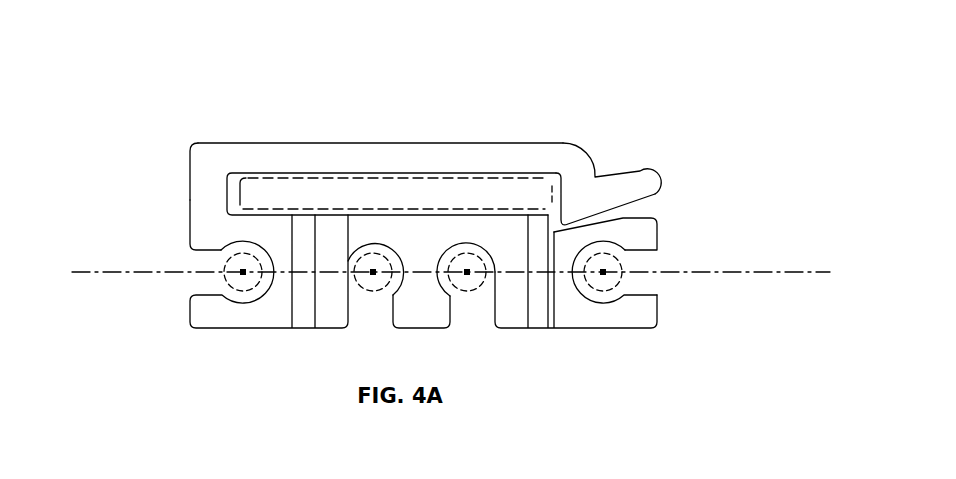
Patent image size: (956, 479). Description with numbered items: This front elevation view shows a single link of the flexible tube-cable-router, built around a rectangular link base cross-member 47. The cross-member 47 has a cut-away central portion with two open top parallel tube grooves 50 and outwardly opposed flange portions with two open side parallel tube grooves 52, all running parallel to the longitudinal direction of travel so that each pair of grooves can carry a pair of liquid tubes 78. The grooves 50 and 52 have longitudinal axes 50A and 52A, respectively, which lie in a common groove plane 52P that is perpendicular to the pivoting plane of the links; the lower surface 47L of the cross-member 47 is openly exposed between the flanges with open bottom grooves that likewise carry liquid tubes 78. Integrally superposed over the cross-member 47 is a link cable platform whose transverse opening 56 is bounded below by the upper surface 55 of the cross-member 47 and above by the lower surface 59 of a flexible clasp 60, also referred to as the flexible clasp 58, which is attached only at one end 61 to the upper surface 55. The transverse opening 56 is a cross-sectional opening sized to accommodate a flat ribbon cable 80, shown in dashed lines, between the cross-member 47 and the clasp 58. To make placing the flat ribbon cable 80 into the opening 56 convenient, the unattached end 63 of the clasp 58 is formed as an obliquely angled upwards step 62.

The link base cross-member 47 is at (268, 343).
The lower surface of link base cross-member 47L is at (445, 330).
The open top parallel tube grooves 50 is at (366, 298).
The longitudinal axis of tube grooves 50 50A is at (463, 293).
The open side parallel tube grooves 52 is at (179, 276).
The longitudinal axis of tube grooves 52 52A is at (240, 273).
The groove plane 52P is at (450, 272).
The upper surface of link base cross-member 55 is at (255, 213).
The transverse opening 56 is at (398, 177).
The flexible clasp 58 is at (438, 143).
The lower surface of flexible clasp 59 is at (305, 174).
The flexible clasp 60 is at (536, 110).
The attached end of flexible clasp 61 is at (190, 168).
The obliquely angled upwards step 62 is at (623, 151).
The unattached end of flexible clasp 63 is at (658, 235).
The liquid tubes 78 is at (585, 282).
The flat ribbon cable 80 is at (356, 173).